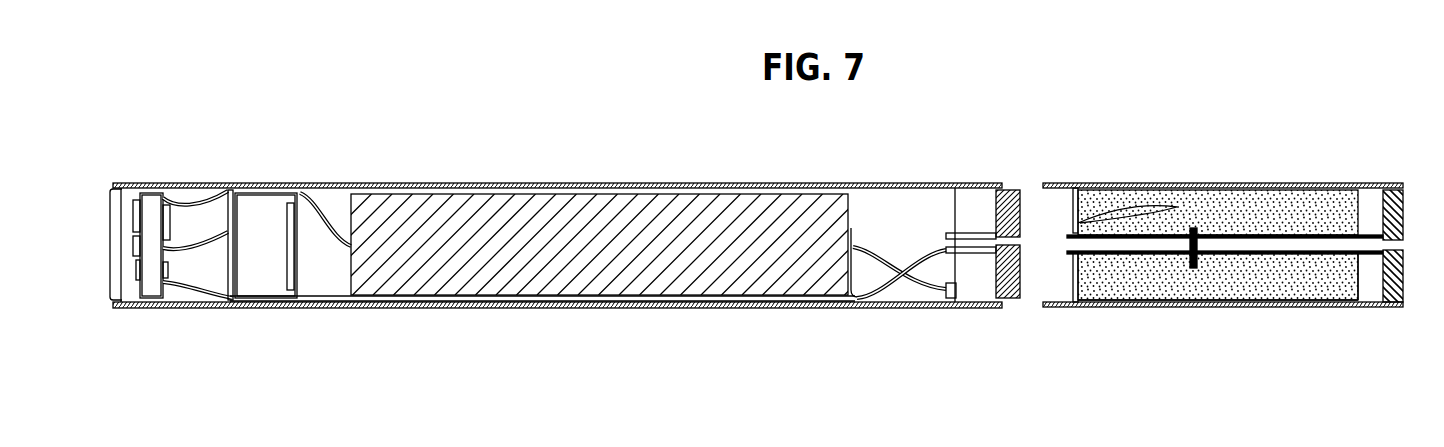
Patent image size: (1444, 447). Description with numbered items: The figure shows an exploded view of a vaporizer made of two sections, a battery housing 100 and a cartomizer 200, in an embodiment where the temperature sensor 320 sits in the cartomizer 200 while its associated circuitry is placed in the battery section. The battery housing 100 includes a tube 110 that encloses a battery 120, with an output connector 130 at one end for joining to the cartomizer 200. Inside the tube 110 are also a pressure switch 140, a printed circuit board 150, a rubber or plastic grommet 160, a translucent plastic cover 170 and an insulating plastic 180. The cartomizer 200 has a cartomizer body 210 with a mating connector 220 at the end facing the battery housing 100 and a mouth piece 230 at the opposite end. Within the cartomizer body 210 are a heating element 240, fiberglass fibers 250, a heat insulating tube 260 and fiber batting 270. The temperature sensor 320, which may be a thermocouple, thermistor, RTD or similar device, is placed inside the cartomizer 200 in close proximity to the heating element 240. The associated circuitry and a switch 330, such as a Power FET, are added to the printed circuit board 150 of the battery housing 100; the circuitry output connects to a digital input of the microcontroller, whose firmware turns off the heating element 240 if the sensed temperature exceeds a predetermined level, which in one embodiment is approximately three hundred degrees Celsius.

The battery housing 100 is at (447, 170).
The tube 110 is at (708, 185).
The battery 120 is at (625, 308).
The output connector 130 is at (1022, 298).
The pressure switch 140 is at (272, 260).
The printed circuit board 150 is at (155, 308).
The rubber or plastic grommet 160 is at (265, 308).
The translucent plastic cover 170 is at (113, 308).
The insulating plastic 180 is at (232, 183).
The switch 330 is at (135, 215).
The cartomizer 200 is at (1290, 172).
The cartomizer body 210 is at (1133, 183).
The mating connector 220 is at (1057, 183).
The mouth piece 230 is at (1398, 213).
The heating element 240 is at (1167, 255).
The fiberglass fibers 250 is at (1190, 268).
The heat insulting tube 260 is at (1337, 258).
The fiber batting 270 is at (1212, 283).
The temperature sensor 320 is at (1177, 205).